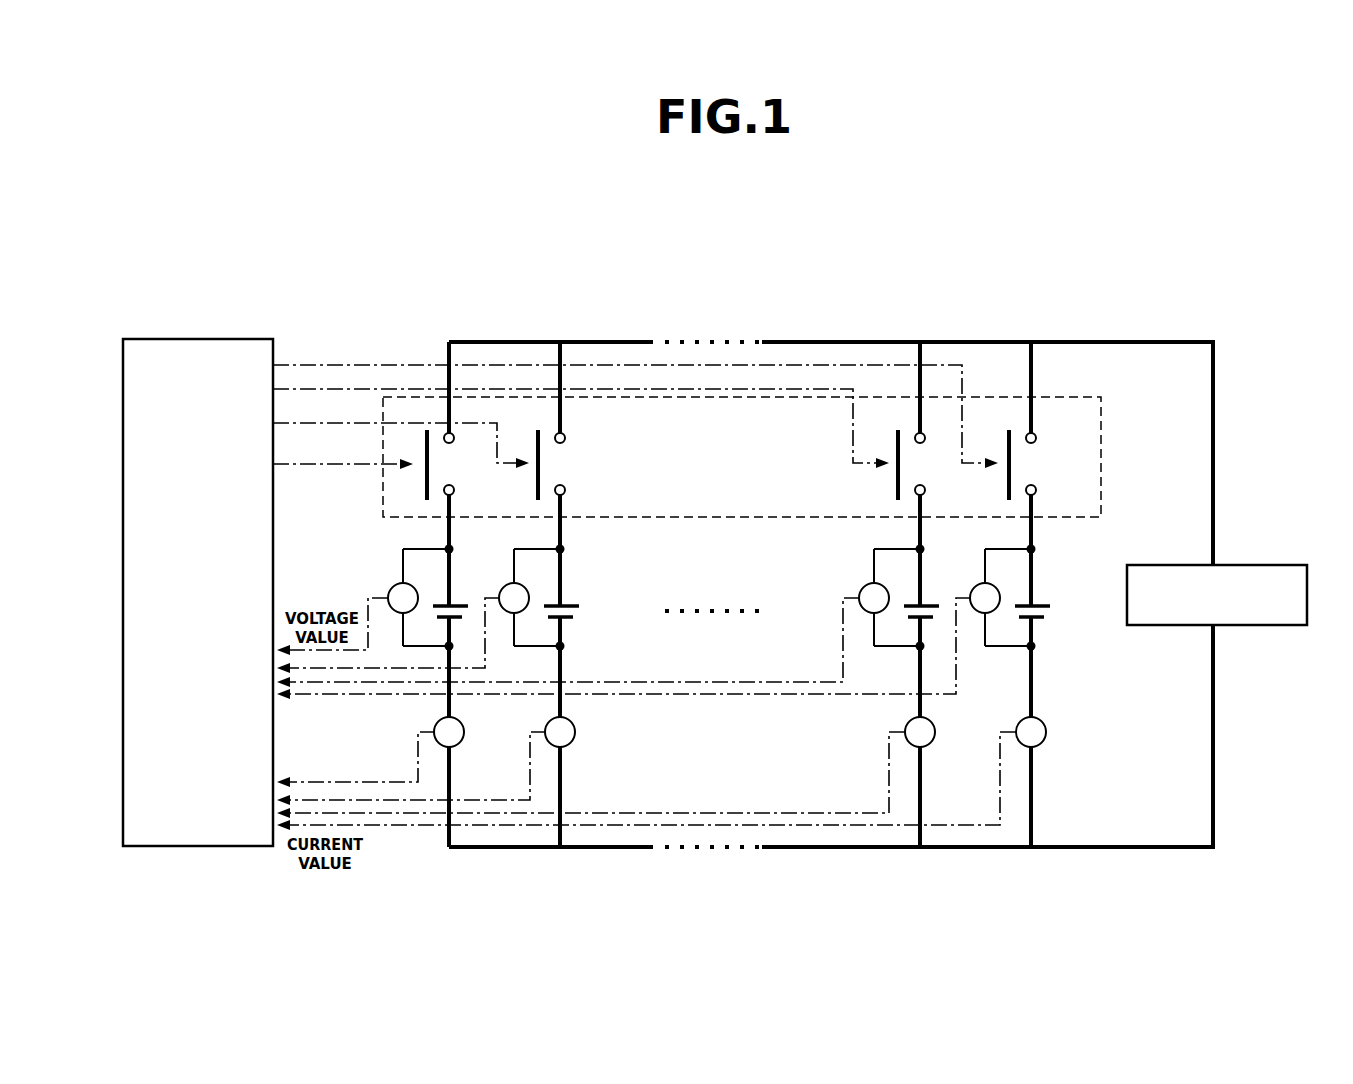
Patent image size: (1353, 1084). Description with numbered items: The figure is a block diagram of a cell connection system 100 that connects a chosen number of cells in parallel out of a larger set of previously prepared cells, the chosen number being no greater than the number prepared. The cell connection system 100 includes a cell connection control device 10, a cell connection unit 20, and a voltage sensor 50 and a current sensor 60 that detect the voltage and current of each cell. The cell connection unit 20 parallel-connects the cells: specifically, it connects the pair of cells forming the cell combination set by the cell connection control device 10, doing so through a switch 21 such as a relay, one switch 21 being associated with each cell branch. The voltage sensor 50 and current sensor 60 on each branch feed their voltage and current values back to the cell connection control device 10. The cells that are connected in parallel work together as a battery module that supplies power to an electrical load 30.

The cell connection system 100 is at (1146, 303).
The cell connection control device 10 is at (198, 338).
The cell connection unit 20 is at (1112, 453).
The switch 21 is at (441, 431).
The electrical load 30 is at (1237, 564).
The voltage sensor 50 is at (391, 589).
The current sensor 60 is at (436, 727).